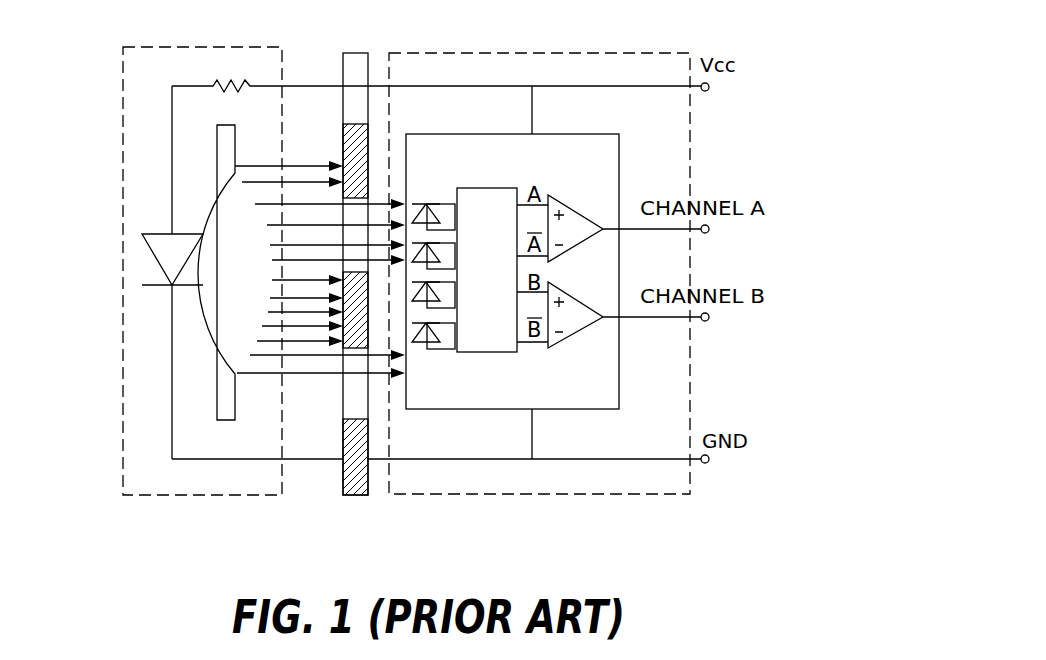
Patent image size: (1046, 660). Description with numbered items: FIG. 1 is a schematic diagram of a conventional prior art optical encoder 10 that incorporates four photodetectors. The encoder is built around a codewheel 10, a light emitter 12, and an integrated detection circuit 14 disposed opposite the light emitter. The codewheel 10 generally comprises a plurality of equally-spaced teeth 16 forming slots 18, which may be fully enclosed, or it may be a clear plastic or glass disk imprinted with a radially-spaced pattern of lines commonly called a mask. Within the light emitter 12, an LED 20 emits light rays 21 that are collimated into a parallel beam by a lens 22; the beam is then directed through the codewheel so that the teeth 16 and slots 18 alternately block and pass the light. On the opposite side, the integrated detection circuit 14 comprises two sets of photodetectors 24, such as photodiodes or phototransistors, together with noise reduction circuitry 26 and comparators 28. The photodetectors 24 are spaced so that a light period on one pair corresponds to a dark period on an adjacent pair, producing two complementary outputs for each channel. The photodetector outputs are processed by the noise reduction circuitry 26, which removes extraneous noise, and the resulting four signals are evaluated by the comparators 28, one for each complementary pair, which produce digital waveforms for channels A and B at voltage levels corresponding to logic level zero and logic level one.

The codewheel 10 is at (357, 497).
The light emitter 12 is at (132, 495).
The integrated detection circuit 14 is at (607, 494).
The teeth 16 is at (343, 475).
The slots 18 is at (352, 212).
The LED 20 is at (150, 258).
The light rays 21 is at (323, 373).
The lens 22 is at (217, 318).
The photodetectors 24 is at (440, 188).
The noise reduction circuitry 26 is at (447, 207).
The comparators 28 is at (580, 218).